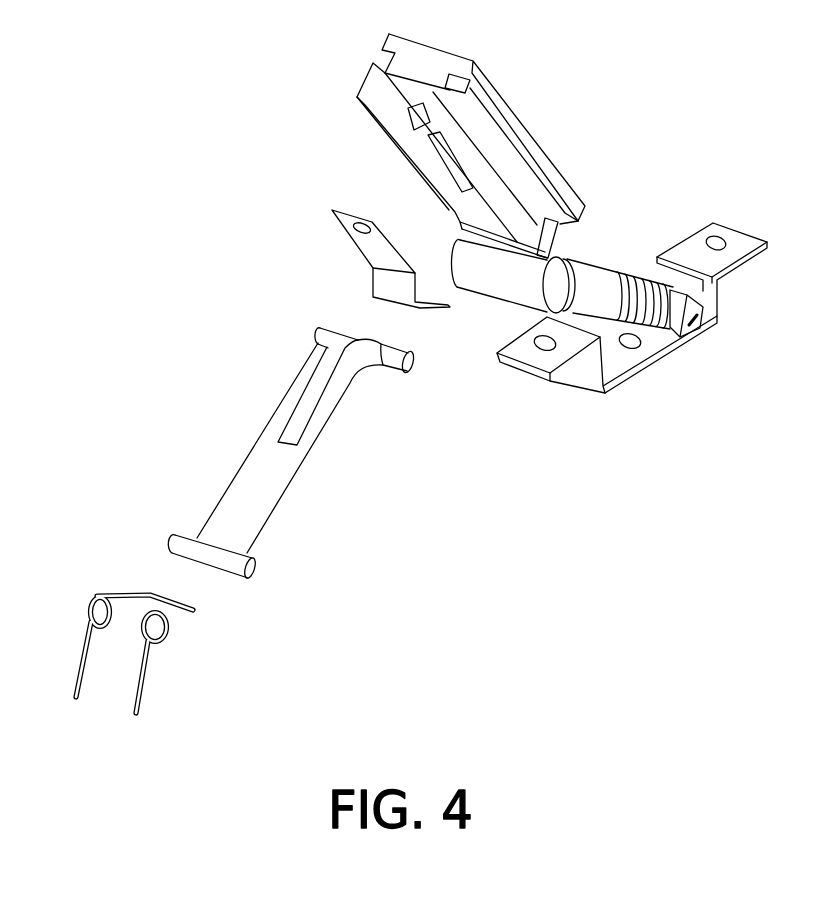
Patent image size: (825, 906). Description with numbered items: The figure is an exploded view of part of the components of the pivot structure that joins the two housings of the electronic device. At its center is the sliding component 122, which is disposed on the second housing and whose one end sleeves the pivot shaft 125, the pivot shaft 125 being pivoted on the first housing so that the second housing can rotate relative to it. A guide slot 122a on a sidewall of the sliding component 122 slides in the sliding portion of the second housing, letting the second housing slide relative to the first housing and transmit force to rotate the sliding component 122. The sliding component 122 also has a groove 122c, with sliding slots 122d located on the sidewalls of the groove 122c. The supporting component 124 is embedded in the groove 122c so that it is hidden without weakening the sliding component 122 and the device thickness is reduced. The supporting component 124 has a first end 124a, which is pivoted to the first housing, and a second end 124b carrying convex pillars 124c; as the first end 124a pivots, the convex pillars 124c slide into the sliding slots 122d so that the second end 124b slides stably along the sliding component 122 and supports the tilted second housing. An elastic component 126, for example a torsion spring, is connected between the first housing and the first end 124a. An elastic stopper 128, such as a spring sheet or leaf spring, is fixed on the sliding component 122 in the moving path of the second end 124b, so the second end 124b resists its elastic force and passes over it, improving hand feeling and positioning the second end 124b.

The sliding component 122 is at (475, 135).
The guide slot 122a is at (462, 86).
The groove 122c is at (417, 143).
The sliding slots 122d is at (465, 191).
The pivot shaft 125 is at (607, 282).
The elastic stopper 128 is at (383, 287).
The supporting component 124 is at (364, 481).
The first end 124a is at (265, 578).
The second end 124b is at (419, 368).
The convex pillars 124c is at (320, 331).
The elastic component 126 is at (153, 685).